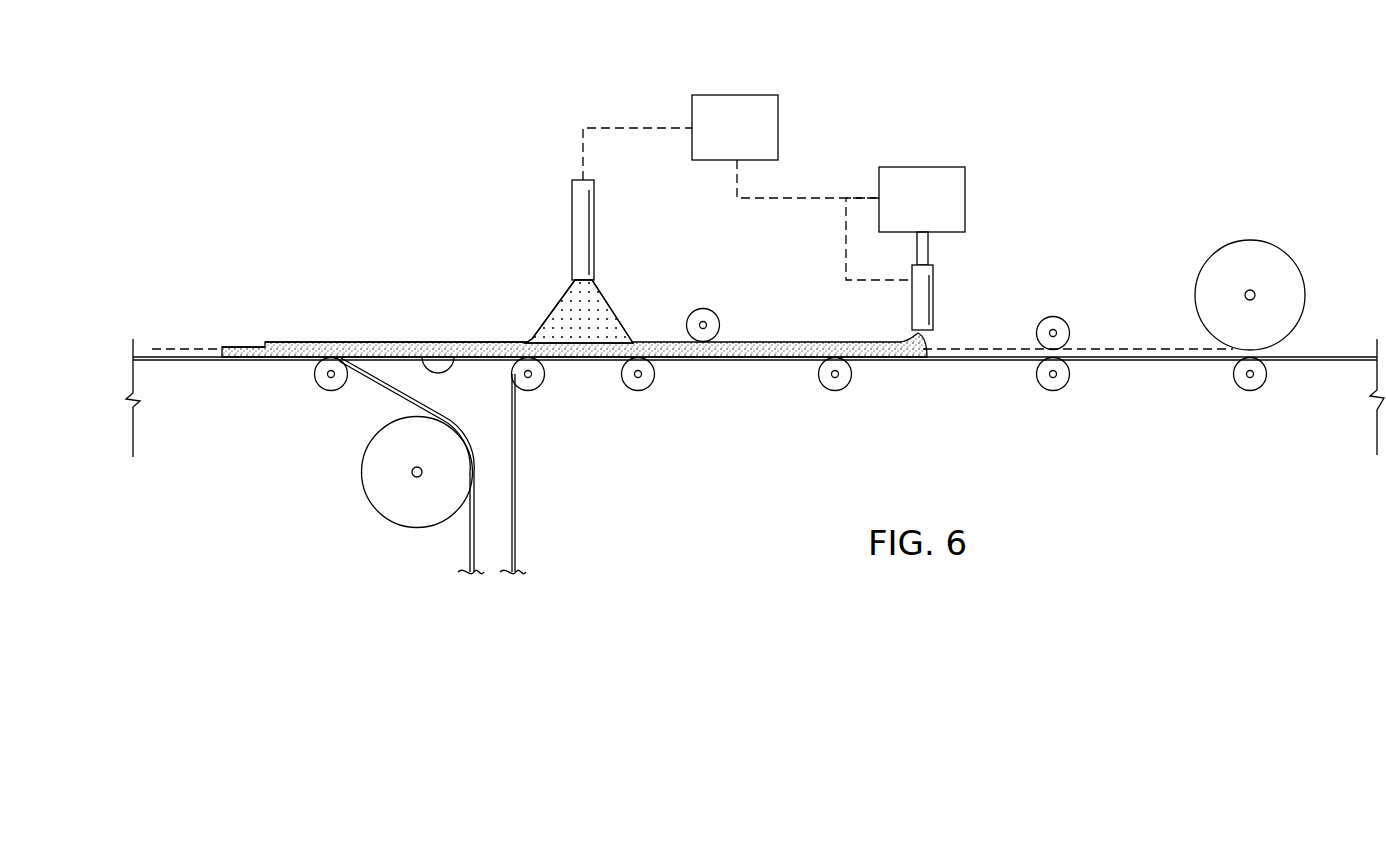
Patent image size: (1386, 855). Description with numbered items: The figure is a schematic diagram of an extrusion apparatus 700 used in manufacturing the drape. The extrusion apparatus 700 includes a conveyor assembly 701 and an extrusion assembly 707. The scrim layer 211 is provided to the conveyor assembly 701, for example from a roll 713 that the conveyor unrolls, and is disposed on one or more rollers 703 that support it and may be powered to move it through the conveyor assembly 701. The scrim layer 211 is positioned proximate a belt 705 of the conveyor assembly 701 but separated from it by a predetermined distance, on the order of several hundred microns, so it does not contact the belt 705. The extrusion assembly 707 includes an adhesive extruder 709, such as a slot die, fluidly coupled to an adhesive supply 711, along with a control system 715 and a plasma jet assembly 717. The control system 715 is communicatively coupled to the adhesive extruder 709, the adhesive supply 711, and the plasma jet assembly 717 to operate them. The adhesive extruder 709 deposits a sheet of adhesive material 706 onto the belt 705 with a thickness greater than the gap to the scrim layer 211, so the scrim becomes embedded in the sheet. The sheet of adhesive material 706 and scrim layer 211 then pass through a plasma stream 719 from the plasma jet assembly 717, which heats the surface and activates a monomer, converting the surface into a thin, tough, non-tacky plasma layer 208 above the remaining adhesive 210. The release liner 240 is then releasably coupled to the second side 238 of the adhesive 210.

The extrusion apparatus 700 is at (410, 100).
The conveyor assembly 701 is at (1328, 462).
The rollers 703 is at (315, 376).
The belt 705 is at (1160, 362).
The sheet of adhesive material 706 is at (802, 345).
The extrusion assembly 707 is at (882, 100).
The adhesive extruder 709 is at (935, 298).
The adhesive supply 711 is at (902, 210).
The roll 713 is at (1253, 240).
The control system 715 is at (715, 140).
The plasma jet assembly 717 is at (572, 222).
The plasma stream 719 is at (549, 318).
The plasma layer 208 is at (319, 341).
The adhesive 210 is at (241, 346).
The scrim layer 211 is at (178, 348).
The second side 238 is at (425, 354).
The release liner 240 is at (372, 386).